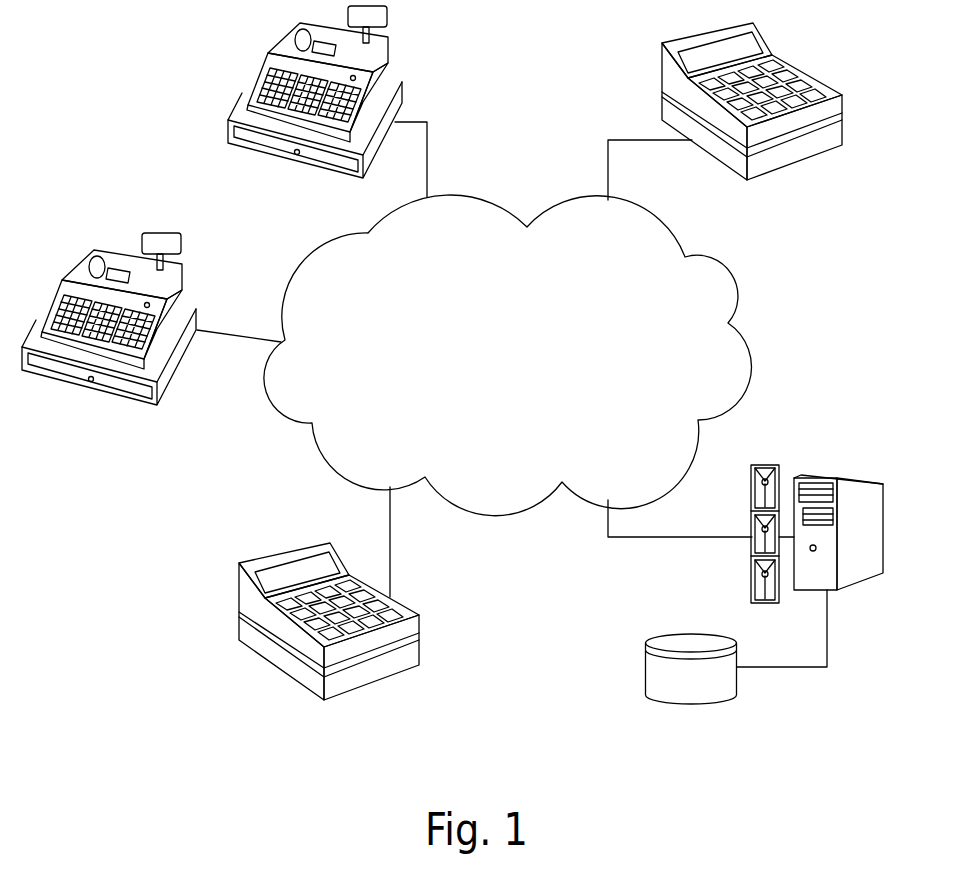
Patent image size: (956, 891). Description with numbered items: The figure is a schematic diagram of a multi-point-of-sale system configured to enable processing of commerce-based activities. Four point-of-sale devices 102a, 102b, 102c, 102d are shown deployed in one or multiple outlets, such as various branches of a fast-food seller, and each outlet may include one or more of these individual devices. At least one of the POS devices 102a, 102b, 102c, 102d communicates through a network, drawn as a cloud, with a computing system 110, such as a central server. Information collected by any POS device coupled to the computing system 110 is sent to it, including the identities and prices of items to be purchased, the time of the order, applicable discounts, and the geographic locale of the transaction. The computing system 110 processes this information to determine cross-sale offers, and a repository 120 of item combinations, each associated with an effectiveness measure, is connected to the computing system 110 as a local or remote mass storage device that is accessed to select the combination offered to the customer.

The POS device 102a is at (672, 78).
The POS device 102b is at (383, 58).
The POS device 102c is at (180, 283).
The POS device 102d is at (405, 627).
The computing system 110 is at (865, 493).
The repository 120 is at (658, 676).